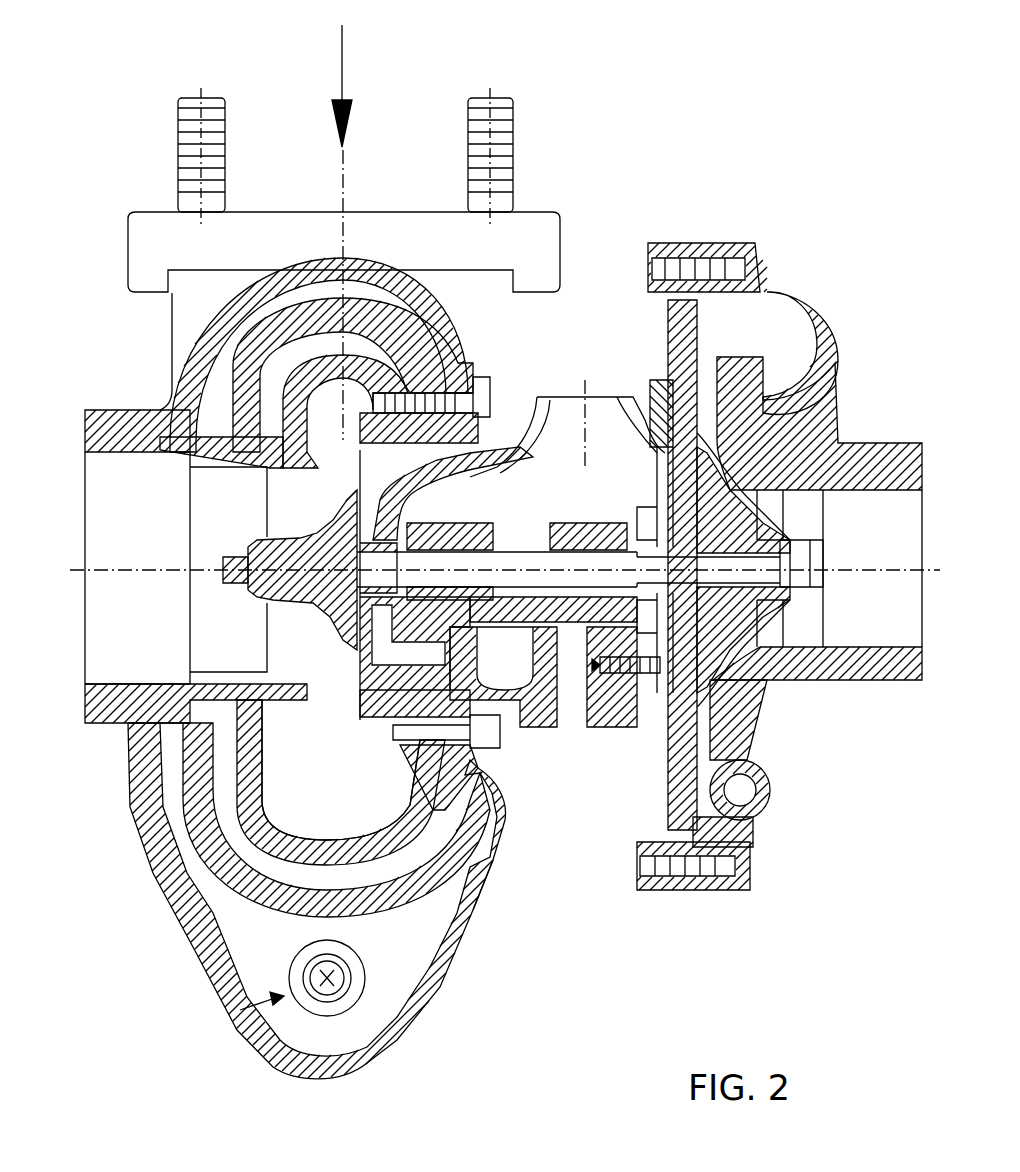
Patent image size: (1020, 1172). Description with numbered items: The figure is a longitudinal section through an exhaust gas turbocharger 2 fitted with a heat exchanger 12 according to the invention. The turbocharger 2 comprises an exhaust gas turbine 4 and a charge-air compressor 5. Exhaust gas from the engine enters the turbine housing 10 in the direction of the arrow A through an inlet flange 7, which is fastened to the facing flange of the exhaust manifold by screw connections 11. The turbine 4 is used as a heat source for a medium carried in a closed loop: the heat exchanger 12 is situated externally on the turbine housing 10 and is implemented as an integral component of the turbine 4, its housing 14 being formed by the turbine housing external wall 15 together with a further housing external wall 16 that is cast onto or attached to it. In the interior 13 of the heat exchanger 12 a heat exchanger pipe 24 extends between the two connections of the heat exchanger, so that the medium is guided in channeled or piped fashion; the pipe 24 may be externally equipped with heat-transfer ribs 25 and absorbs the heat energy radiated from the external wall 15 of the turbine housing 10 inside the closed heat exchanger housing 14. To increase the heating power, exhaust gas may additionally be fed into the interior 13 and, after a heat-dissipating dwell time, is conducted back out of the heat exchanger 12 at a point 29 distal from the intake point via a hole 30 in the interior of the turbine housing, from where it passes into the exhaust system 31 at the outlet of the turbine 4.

The arrow A is at (345, 75).
The exhaust gas turbocharger 2 is at (613, 220).
The exhaust gas turbine 4 is at (342, 809).
The charge-air compressor 5 is at (762, 351).
The flange 7 is at (152, 260).
The turbine housing 10 is at (200, 880).
The screw connections 11 is at (192, 172).
The heat exchanger 12 is at (227, 1020).
The interior 13 is at (413, 932).
The housing 14 is at (442, 985).
The turbine housing external wall 15 is at (445, 855).
The further housing external wall 16 is at (205, 963).
The heat exchanger pipe 24 is at (340, 1000).
The heat-transfer ribs 25 is at (313, 1017).
The point 29 is at (130, 784).
The hole 30 is at (150, 688).
The exhaust system 31 is at (103, 686).